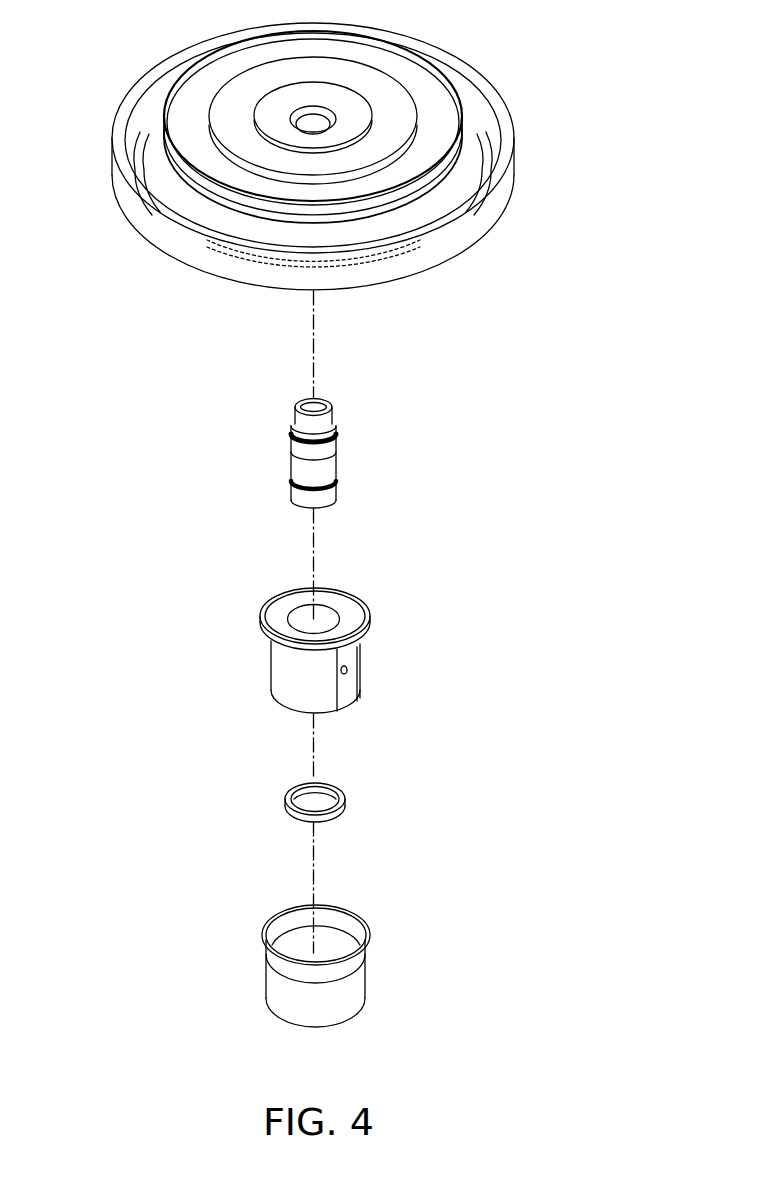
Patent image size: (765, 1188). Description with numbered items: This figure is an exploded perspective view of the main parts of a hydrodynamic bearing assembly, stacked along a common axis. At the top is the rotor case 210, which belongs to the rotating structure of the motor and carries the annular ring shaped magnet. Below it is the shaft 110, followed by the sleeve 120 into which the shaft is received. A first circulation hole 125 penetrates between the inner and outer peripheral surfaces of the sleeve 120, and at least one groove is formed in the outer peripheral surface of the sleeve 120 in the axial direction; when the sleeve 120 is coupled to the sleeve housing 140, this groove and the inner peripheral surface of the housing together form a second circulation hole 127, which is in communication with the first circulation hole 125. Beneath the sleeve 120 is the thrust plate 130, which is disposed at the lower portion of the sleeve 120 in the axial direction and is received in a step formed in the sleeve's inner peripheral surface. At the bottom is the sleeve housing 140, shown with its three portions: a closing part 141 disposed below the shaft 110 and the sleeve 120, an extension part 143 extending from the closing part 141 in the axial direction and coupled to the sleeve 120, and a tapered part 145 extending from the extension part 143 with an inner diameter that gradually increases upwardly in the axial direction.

The rotor case 210 is at (500, 122).
The shaft 110 is at (328, 468).
The sleeve 120 is at (317, 661).
The first circulation hole 125 is at (347, 668).
The second circulation hole 127 is at (347, 695).
The thrust plate 130 is at (343, 803).
The sleeve housing 140 is at (412, 975).
The tapered part 145 is at (365, 948).
The extension part 143 is at (352, 988).
The closing part 141 is at (379, 1021).